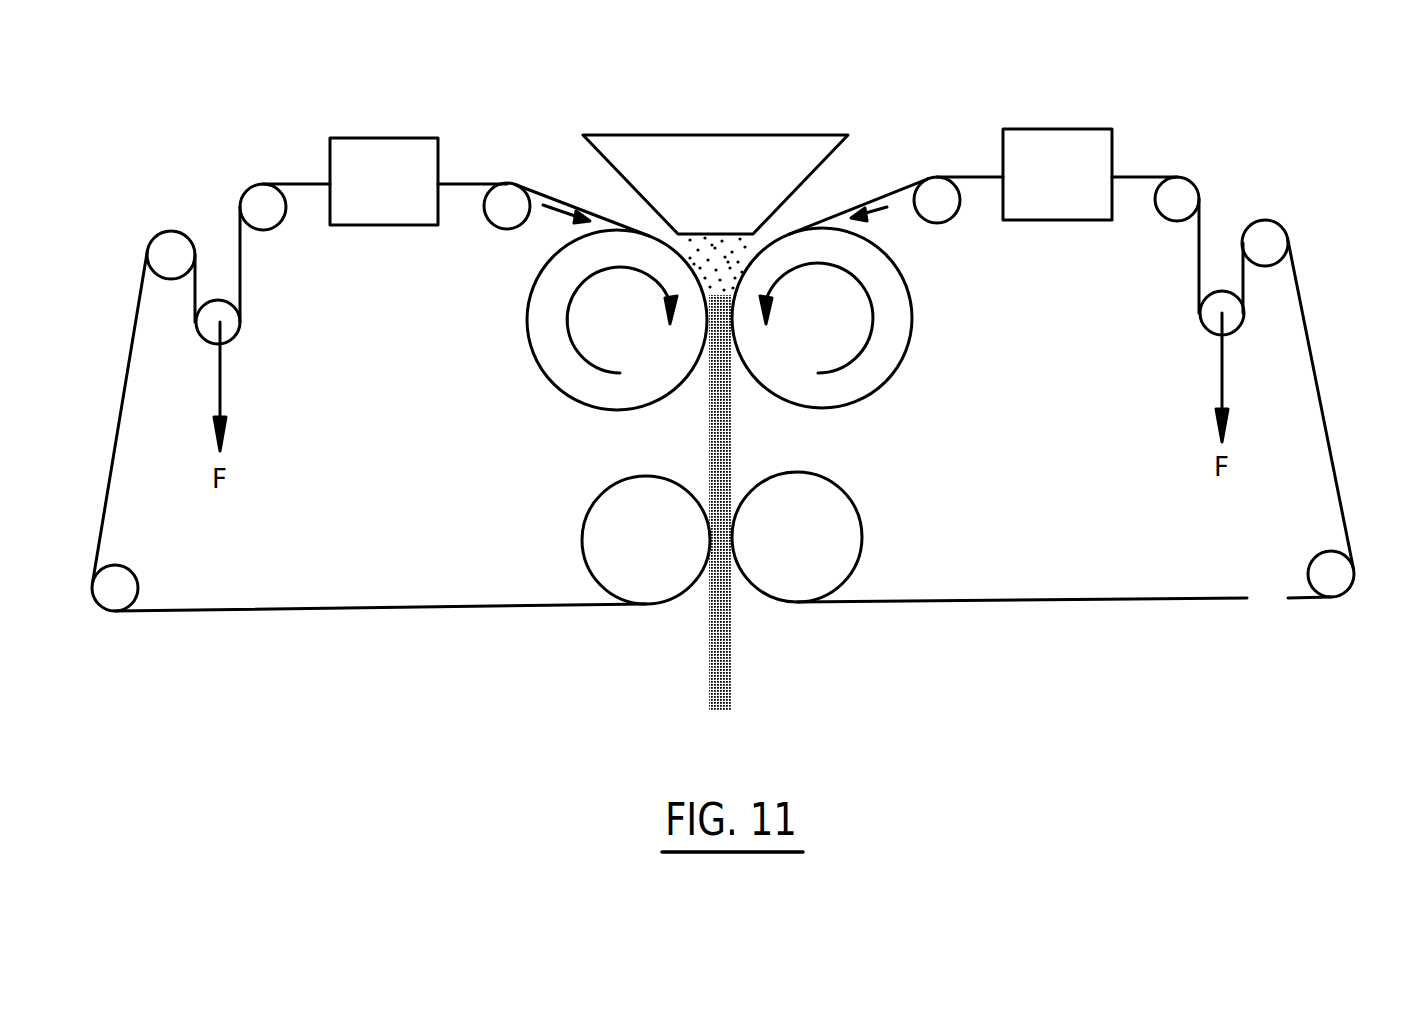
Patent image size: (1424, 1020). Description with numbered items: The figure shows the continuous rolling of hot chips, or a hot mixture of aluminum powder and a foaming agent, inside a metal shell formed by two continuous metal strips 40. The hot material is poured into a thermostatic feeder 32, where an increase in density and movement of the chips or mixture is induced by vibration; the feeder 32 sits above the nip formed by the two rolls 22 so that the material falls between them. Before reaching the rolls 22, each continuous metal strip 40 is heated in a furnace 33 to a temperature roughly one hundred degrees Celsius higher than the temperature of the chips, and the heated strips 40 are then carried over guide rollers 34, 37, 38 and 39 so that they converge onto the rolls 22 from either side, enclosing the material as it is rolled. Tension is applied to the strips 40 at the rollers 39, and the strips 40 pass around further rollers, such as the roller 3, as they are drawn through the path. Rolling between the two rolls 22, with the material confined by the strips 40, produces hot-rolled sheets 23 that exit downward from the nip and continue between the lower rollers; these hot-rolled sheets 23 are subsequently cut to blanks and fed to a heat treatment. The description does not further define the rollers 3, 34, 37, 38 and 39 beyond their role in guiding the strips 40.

The carrier roller 3 is at (1343, 572).
The rolls 22 is at (870, 377).
The hot-rolled sheets 23 is at (733, 670).
The thermostatic feeder 32 is at (717, 158).
The furnace 33 is at (1052, 150).
The guide roller 34 is at (944, 211).
The web feed 37 is at (500, 170).
The guide roller 38 is at (1267, 240).
The tension roller 39 is at (1212, 318).
The continuous metal strips 40 is at (120, 397).